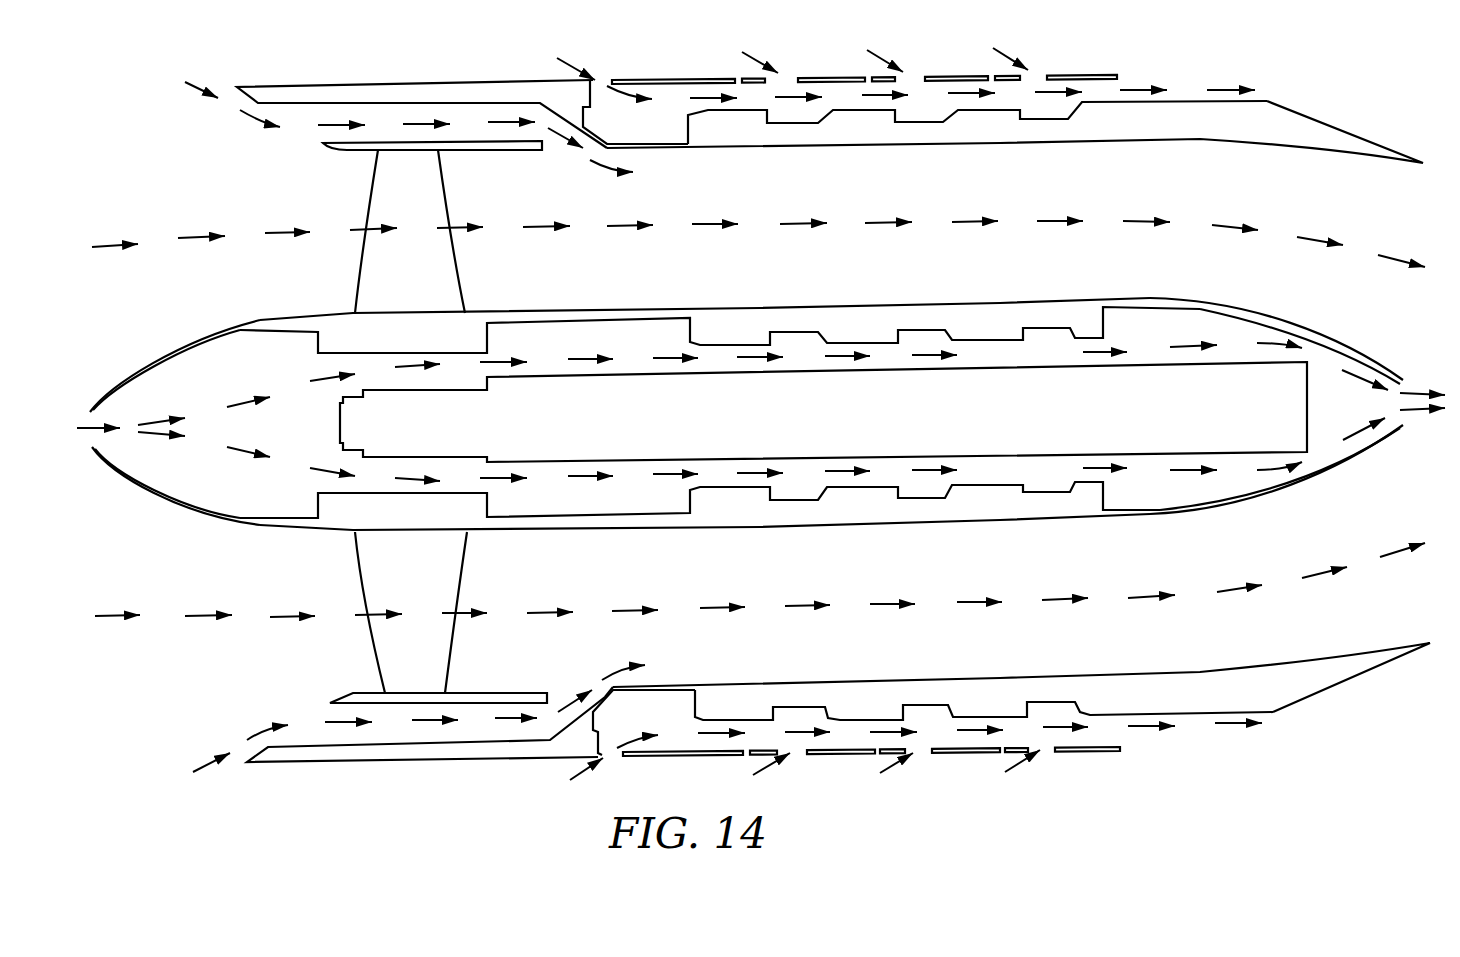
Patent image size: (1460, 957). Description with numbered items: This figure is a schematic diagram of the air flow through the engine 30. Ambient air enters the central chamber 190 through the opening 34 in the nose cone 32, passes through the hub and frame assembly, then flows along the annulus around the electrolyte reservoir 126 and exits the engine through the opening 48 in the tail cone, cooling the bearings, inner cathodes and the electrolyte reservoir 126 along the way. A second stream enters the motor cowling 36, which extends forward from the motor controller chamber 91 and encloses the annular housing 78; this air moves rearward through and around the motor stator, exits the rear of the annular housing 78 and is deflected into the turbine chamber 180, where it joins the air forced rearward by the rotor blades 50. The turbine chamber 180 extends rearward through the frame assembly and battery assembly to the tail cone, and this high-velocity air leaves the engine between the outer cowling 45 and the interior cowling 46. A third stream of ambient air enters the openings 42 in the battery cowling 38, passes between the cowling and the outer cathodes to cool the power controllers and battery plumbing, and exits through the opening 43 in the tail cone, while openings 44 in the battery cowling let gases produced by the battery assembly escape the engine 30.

The engine 30 is at (683, 52).
The nose cone 32 is at (183, 340).
The opening 34 is at (90, 412).
The motor cowling 36 is at (465, 80).
The battery cowling 38 is at (820, 80).
The openings 42 is at (598, 80).
The opening 43 is at (1125, 82).
The openings 44 is at (870, 80).
The outer cowling 45 is at (1338, 125).
The interior cowling 46 is at (1367, 356).
The opening 48 is at (1400, 428).
The blades 50 is at (390, 209).
The annular housing 78 is at (335, 150).
The motor controller chamber 91 is at (605, 130).
The electrolyte reservoir 126 is at (728, 460).
The turbine chamber 180 is at (923, 197).
The central chamber 190 is at (173, 395).